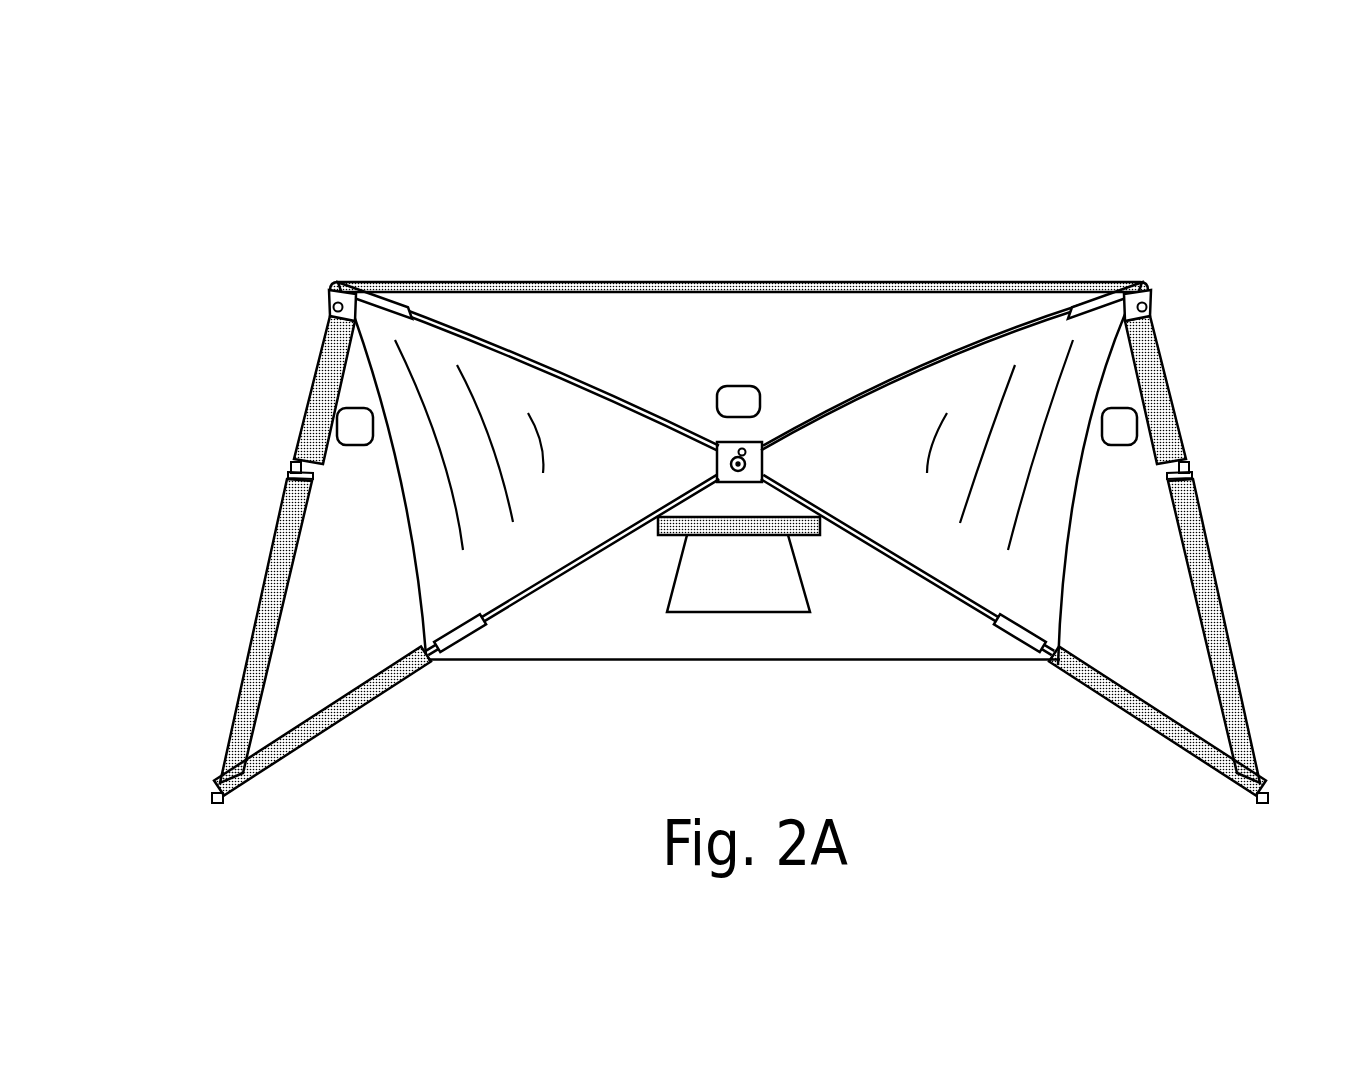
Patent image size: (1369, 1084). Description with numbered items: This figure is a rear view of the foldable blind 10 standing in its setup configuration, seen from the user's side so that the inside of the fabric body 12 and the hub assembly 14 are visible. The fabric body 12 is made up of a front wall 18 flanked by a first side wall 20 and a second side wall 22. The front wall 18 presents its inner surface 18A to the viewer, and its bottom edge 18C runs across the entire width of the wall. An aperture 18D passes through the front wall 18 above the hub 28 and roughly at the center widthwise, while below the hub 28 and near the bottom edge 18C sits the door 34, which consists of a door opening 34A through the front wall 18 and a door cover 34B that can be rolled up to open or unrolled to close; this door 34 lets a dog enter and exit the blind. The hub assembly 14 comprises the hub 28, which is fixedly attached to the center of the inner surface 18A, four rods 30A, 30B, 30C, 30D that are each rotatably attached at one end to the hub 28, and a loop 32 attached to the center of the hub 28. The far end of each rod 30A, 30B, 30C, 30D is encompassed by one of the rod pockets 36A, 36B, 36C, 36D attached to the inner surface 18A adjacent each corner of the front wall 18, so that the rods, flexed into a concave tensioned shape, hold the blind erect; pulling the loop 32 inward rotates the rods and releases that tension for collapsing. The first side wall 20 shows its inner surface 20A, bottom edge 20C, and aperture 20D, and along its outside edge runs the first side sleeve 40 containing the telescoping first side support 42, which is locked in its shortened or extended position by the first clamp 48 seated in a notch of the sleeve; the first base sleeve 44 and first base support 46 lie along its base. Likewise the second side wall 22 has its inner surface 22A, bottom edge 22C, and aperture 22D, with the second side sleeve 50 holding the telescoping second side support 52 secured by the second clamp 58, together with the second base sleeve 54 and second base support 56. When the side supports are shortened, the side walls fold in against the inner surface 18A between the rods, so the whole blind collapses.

The foldable blind 10 is at (717, 237).
The fabric body 12 is at (866, 281).
The hub assembly 14 is at (713, 427).
The front wall 18 is at (877, 338).
The inner surface 18A is at (960, 632).
The bottom edge 18C is at (877, 660).
The aperture 18D is at (727, 385).
The first side wall 20 is at (337, 543).
The inner surface 20A is at (283, 693).
The bottom edge 20C is at (330, 723).
The aperture 20D is at (353, 417).
The second side wall 22 is at (1123, 521).
The inner surface 22A is at (1143, 612).
The bottom edge 22C is at (1203, 755).
The aperture 22D is at (1122, 405).
The hub 28 is at (750, 443).
The rod 30A is at (573, 566).
The rod 30B is at (494, 346).
The rod 30C is at (1015, 330).
The rod 30D is at (985, 615).
The loop 32 is at (723, 480).
The door 34 is at (717, 623).
The door opening 34A is at (750, 575).
The door cover 34B is at (767, 480).
The rod pocket 36A is at (457, 637).
The rod pocket 36B is at (382, 300).
The rod pocket 36C is at (1102, 300).
The rod pocket 36D is at (1037, 645).
The first side sleeve 40 is at (283, 519).
The first side support 42 is at (296, 462).
The first base sleeve 44 is at (285, 747).
The first base support 46 is at (383, 692).
The first clamp 48 is at (280, 478).
The second side sleeve 50 is at (1228, 687).
The second side support 52 is at (1190, 460).
The second base sleeve 54 is at (1172, 725).
The second base support 56 is at (1125, 707).
The second clamp 58 is at (1200, 473).